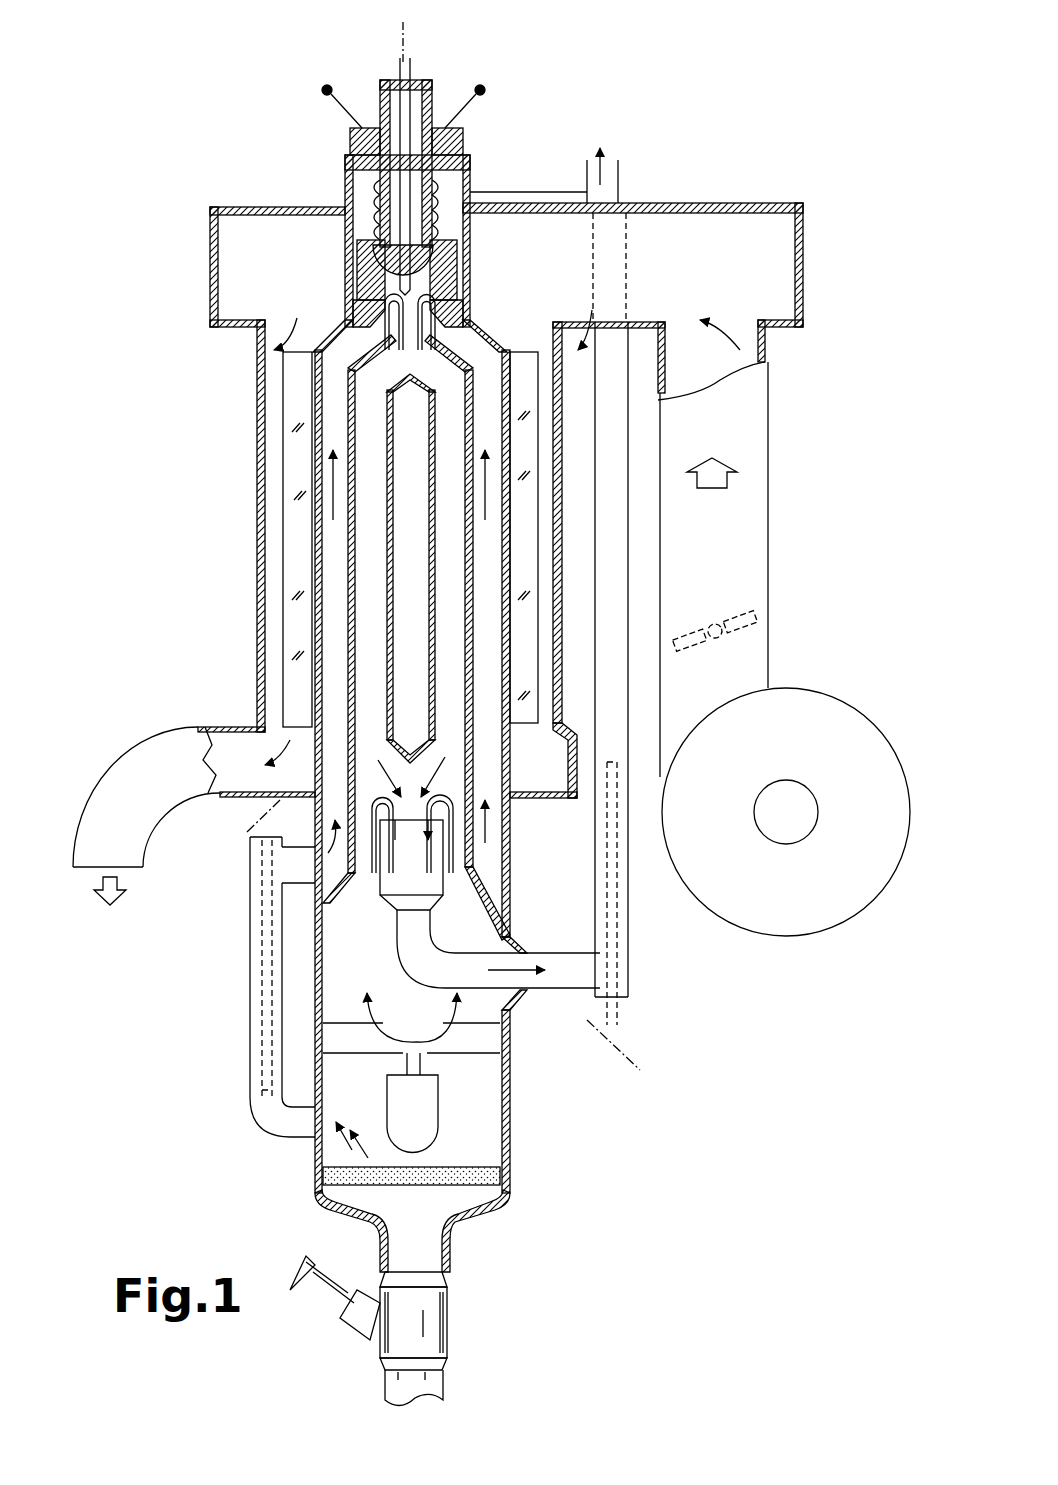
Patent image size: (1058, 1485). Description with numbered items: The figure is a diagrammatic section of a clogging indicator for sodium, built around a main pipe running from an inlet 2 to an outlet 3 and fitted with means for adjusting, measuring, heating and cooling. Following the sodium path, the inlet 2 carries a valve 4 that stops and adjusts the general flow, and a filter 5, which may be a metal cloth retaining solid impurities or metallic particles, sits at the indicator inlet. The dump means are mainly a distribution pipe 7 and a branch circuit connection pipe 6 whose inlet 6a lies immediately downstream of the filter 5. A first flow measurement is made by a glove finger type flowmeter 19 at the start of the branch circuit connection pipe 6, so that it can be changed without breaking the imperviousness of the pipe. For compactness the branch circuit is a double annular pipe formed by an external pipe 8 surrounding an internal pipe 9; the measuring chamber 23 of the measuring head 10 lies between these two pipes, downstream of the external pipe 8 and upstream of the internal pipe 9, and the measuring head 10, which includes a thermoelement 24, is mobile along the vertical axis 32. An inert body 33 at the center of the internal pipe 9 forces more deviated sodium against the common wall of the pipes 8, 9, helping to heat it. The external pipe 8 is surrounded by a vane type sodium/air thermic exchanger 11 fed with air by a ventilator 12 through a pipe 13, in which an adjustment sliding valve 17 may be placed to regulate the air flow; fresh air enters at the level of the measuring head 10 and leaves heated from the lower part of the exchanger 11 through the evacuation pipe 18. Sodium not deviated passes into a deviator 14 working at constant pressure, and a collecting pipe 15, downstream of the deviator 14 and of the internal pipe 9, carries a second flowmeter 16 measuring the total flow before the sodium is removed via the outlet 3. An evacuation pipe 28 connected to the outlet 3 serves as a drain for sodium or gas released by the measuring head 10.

The inlet 2 is at (432, 1318).
The outlet 3 is at (613, 185).
The valve 4 is at (330, 1307).
The filter 5 is at (467, 1185).
The branch circuit connection pipe 6 is at (330, 877).
The inlet of the branch circuit connection pipe 6a is at (290, 1125).
The distribution pipe 7 is at (350, 1150).
The external pipe 8 is at (332, 538).
The internal pipe 9 is at (373, 613).
The measuring head 10 is at (348, 137).
The sodium/air thermic exchanger 11 is at (300, 650).
The ventilator 12 is at (780, 915).
The pipe 13 is at (747, 432).
The deviator 14 is at (418, 1040).
The collecting pipe 15 is at (567, 978).
The second flowmeter 16 is at (617, 1017).
The adjustment sliding valve 17 is at (740, 630).
The evacuation pipe 18 is at (127, 783).
The flowmeter 19 is at (263, 1013).
The measuring chamber 23 is at (370, 287).
The thermoelement 24 is at (410, 72).
The evacuation pipe 28 is at (528, 193).
The vertical axis 32 is at (398, 27).
The inert body 33 is at (410, 445).